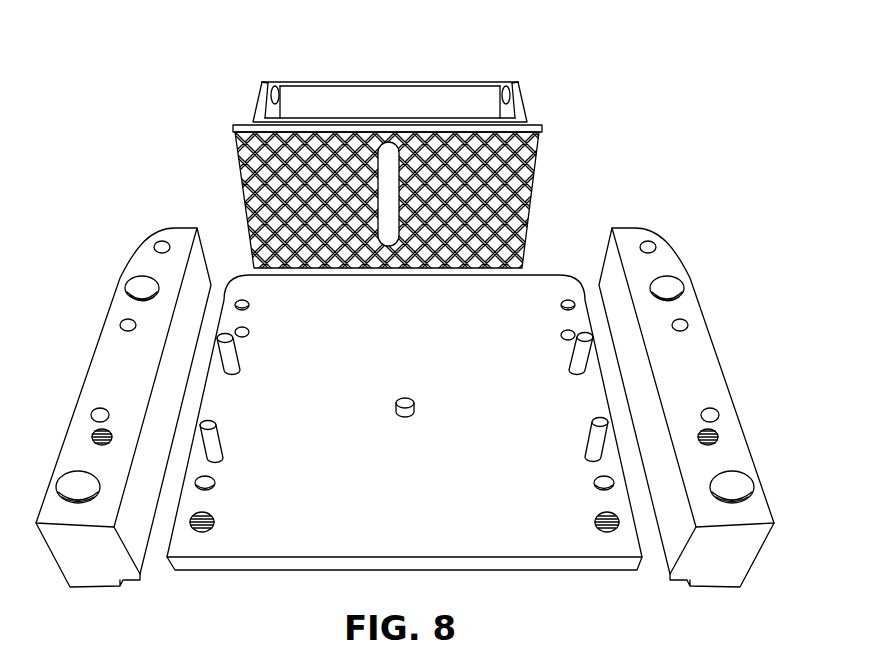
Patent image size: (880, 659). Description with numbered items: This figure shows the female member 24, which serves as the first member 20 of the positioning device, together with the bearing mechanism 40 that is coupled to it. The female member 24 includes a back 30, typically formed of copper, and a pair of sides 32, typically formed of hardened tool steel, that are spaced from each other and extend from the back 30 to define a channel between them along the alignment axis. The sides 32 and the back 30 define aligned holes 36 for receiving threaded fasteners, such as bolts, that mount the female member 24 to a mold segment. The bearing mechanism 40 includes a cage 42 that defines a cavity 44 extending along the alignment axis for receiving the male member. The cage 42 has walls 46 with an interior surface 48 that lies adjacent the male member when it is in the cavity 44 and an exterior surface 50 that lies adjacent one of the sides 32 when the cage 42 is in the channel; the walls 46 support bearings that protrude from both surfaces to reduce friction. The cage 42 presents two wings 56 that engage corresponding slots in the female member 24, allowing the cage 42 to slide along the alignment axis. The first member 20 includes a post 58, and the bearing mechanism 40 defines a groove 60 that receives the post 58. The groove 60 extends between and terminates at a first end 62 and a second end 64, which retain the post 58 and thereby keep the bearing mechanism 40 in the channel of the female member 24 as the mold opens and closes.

The first member 20 is at (627, 170).
The female member 24 is at (588, 75).
The back 30 is at (480, 393).
The sides 32 is at (95, 382).
The holes 36 is at (138, 276).
The bearing mechanism 40 is at (403, 72).
The cage 42 is at (333, 82).
The cavity 44 is at (448, 107).
The walls 46 is at (252, 103).
The interior surface 48 is at (278, 84).
The exterior surface 50 is at (261, 96).
The wing 56 is at (233, 128).
The post 58 is at (405, 416).
The groove 60 is at (383, 227).
The first end 62 is at (395, 248).
The second end 64 is at (389, 142).